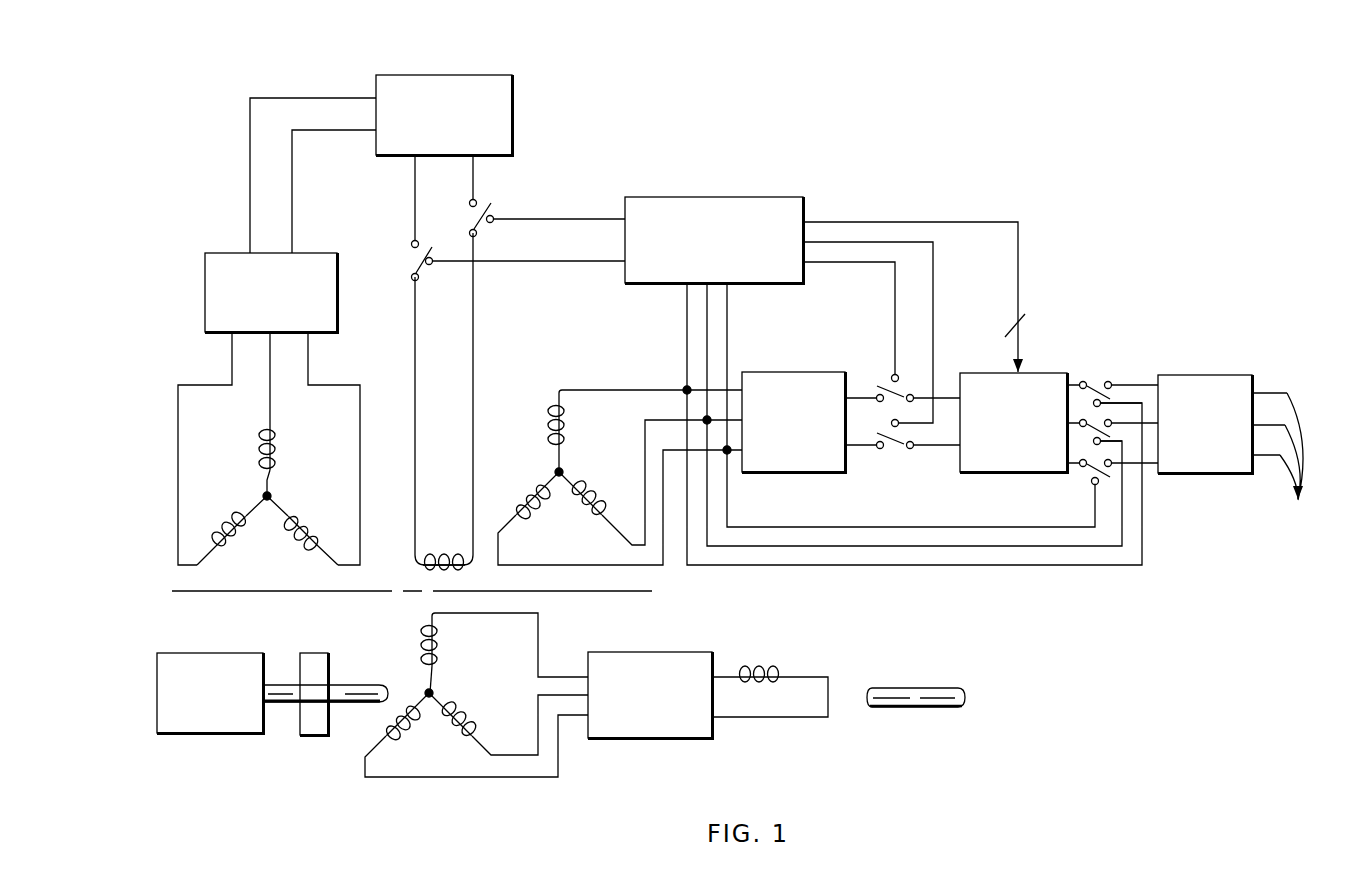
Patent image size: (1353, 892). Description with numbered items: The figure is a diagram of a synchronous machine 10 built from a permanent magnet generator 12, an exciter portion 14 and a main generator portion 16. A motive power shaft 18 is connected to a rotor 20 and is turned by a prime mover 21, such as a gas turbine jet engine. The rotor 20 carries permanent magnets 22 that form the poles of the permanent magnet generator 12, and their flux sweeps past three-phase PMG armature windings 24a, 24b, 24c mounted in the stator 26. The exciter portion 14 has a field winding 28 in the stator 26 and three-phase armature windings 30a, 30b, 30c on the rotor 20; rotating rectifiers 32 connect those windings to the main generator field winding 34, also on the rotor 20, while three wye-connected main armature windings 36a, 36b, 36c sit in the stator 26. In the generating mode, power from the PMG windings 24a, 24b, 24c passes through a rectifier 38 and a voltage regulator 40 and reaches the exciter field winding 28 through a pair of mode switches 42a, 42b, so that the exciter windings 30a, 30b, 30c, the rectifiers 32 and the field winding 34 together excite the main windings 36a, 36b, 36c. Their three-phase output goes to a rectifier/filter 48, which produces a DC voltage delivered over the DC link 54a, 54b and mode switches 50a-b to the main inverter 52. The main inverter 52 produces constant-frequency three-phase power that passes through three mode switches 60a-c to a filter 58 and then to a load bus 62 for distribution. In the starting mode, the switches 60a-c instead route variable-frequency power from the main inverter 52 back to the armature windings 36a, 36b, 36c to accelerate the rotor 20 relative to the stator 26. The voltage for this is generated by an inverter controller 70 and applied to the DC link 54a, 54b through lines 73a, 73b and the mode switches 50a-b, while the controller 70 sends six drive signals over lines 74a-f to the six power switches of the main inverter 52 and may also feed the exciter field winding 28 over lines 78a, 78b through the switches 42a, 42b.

The synchronous machine 10 is at (636, 127).
The permanent magnet generator 12 is at (198, 630).
The exciter portion 14 is at (534, 602).
The main generator portion 16 is at (655, 565).
The motive power shaft 18 is at (282, 685).
The rotor 20 is at (312, 750).
The prime mover 21 is at (232, 653).
The permanent magnet 22 is at (330, 672).
The PMG armature winding 24a is at (275, 443).
The PMG armature winding 24b is at (222, 535).
The PMG armature winding 24c is at (293, 518).
The stator 26 is at (220, 463).
The exciter field winding 28 is at (433, 547).
The exciter armature winding 30a is at (440, 655).
The exciter armature winding 30b is at (470, 717).
The exciter armature winding 30c is at (400, 733).
The rotating rectifiers 32 is at (647, 738).
The main generator field winding 34 is at (760, 665).
The main generator armature winding 36a is at (570, 437).
The main generator armature winding 36b is at (595, 490).
The main generator armature winding 36c is at (530, 517).
The rectifier 38 is at (237, 253).
The voltage regulator 40 is at (512, 132).
The mode switch 42a is at (417, 260).
The mode switch 42b is at (485, 226).
The rectifier/filter 48 is at (747, 372).
The mode switches 50a-b is at (864, 385).
The main inverter 52 is at (980, 472).
The DC link 54a is at (945, 398).
The DC link 54b is at (927, 447).
The filter 58 is at (1197, 473).
The mode switches 60a-c is at (1138, 371).
The load bus 62 is at (1280, 461).
The inverter controller 70 is at (782, 197).
The line 73a is at (896, 305).
The line 73b is at (934, 305).
The lines 74a-f is at (1022, 272).
The line 78a is at (603, 218).
The line 78b is at (593, 265).